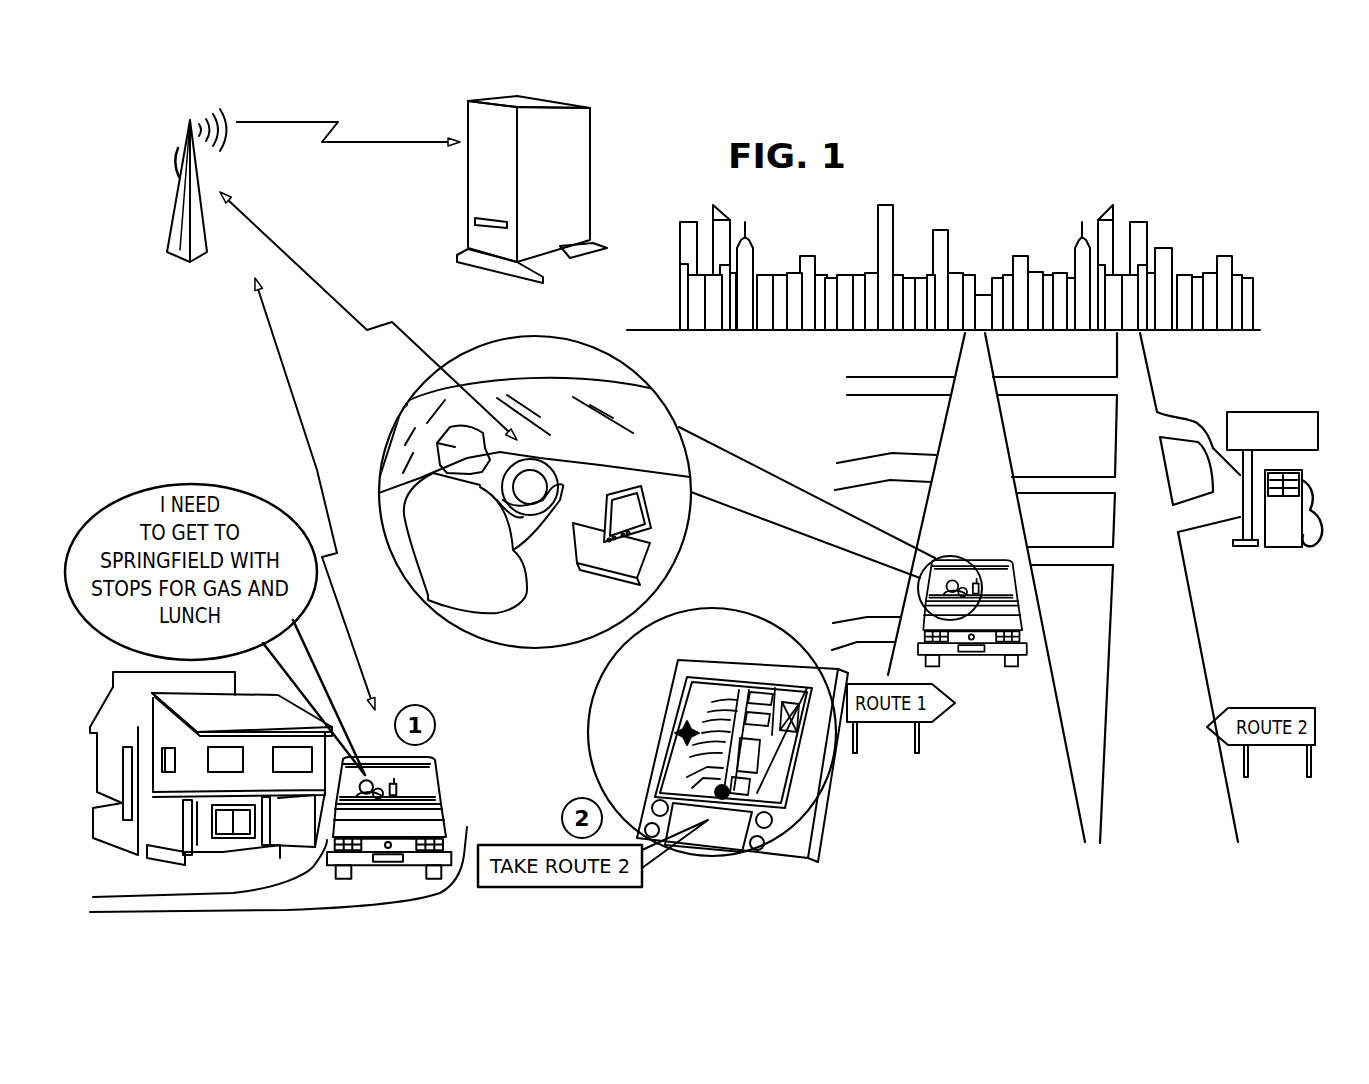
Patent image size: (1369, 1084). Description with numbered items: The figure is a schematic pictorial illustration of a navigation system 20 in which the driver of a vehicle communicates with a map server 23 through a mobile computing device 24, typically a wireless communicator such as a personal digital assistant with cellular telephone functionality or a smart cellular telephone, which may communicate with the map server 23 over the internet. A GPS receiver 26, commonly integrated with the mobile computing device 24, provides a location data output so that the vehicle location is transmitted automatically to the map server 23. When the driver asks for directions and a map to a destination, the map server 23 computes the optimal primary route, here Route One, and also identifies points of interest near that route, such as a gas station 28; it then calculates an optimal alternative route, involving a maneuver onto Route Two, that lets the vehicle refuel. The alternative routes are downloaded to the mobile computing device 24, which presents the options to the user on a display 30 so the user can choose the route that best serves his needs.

The navigation system 20 is at (160, 127).
The map server 23 is at (470, 192).
The mobile computing device 24 is at (630, 500).
The GPS receiver 26 is at (592, 572).
The gas station 28 is at (1240, 425).
The display 30 is at (722, 715).